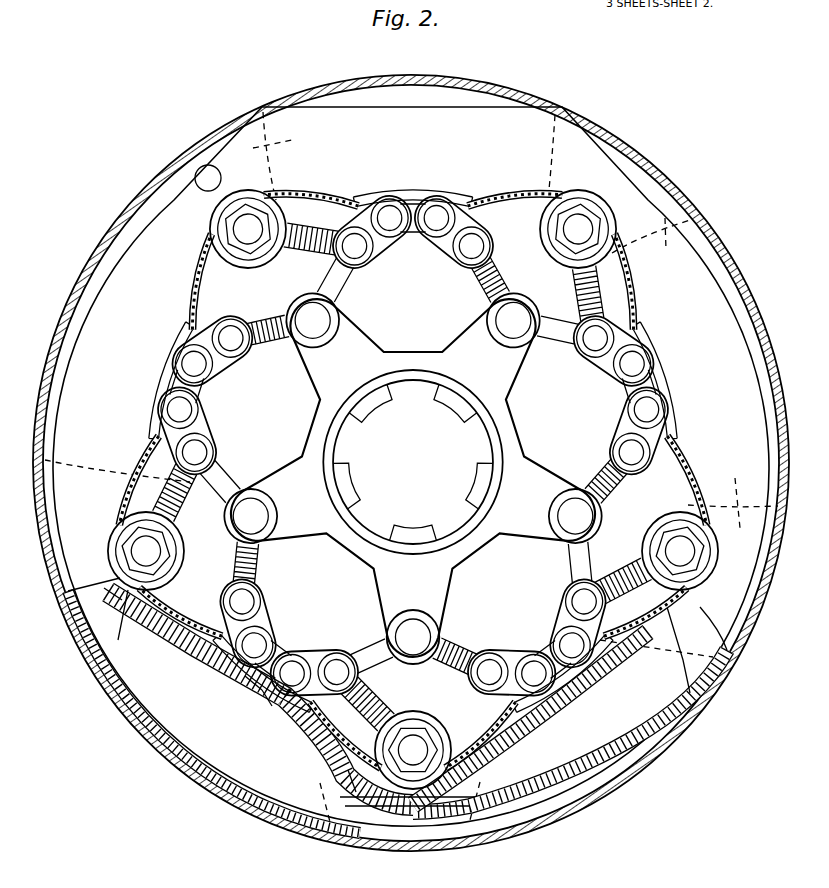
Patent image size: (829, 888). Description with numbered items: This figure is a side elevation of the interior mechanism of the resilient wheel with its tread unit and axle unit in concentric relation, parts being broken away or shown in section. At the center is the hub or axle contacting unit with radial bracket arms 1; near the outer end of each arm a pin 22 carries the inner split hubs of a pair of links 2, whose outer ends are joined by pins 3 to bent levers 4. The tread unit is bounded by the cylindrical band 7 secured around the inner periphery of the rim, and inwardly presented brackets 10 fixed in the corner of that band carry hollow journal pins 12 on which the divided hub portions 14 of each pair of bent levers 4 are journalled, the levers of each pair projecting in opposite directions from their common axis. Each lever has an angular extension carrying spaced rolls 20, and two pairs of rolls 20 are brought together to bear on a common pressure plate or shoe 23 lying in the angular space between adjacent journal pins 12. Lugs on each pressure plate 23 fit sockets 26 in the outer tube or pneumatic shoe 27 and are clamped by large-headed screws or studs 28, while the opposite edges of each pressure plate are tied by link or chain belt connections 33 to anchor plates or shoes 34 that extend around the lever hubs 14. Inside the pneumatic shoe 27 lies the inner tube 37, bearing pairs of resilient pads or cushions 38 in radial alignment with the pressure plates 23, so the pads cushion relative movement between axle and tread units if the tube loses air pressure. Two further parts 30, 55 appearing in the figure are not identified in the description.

The bracket arms 1 is at (413, 478).
The links 2 is at (413, 463).
The pins 3 is at (413, 460).
The bent levers 4 is at (403, 478).
The cylindrical band 7 is at (640, 774).
The brackets 10 is at (233, 130).
The hollow journal pin 12 is at (427, 467).
The hub portions 14 is at (330, 750).
The rolls 20 is at (413, 449).
The pin 22 is at (413, 478).
The pressure plate or shoe 23 is at (407, 452).
The sockets 26 is at (250, 678).
The outer tube or shoe 27 is at (193, 627).
The screws or studs 28 is at (262, 690).
The band joint 30 is at (397, 807).
The link or chain belt connections 33 is at (407, 462).
The anchor plates or shoes 34 is at (409, 492).
The inner tube 37 is at (348, 771).
The resilient pads or cushions 38 is at (258, 703).
The hole 55 is at (206, 183).